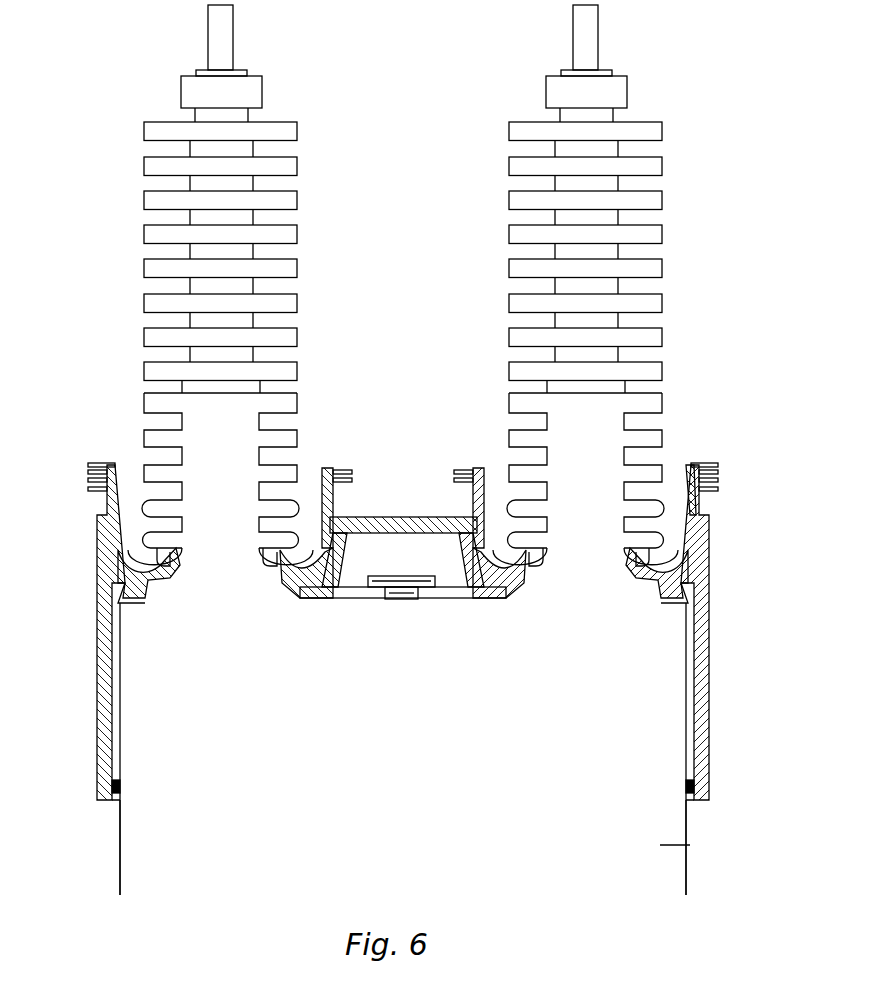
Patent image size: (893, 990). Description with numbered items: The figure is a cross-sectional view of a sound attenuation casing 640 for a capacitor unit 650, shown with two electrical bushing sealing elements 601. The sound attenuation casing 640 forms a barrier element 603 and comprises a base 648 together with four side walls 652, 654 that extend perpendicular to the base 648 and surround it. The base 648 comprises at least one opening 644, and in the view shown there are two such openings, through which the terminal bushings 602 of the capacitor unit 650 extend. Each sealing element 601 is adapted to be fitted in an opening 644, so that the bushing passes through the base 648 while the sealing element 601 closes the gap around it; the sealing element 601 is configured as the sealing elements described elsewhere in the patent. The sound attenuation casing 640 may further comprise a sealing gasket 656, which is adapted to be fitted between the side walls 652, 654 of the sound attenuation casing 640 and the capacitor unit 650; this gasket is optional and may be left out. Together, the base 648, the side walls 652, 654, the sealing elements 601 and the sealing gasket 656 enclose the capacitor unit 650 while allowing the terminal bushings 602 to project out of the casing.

The electrical bushing sealing element 601 is at (115, 496).
The terminal bushing 602 is at (193, 285).
The barrier element 603 is at (698, 523).
The sound attenuation casing 640 is at (708, 602).
The opening 644 is at (345, 515).
The base 648 is at (405, 515).
The capacitor unit 650 is at (687, 845).
The side wall 652 is at (709, 727).
The side wall 654 is at (97, 680).
The sealing gasket 656 is at (115, 785).